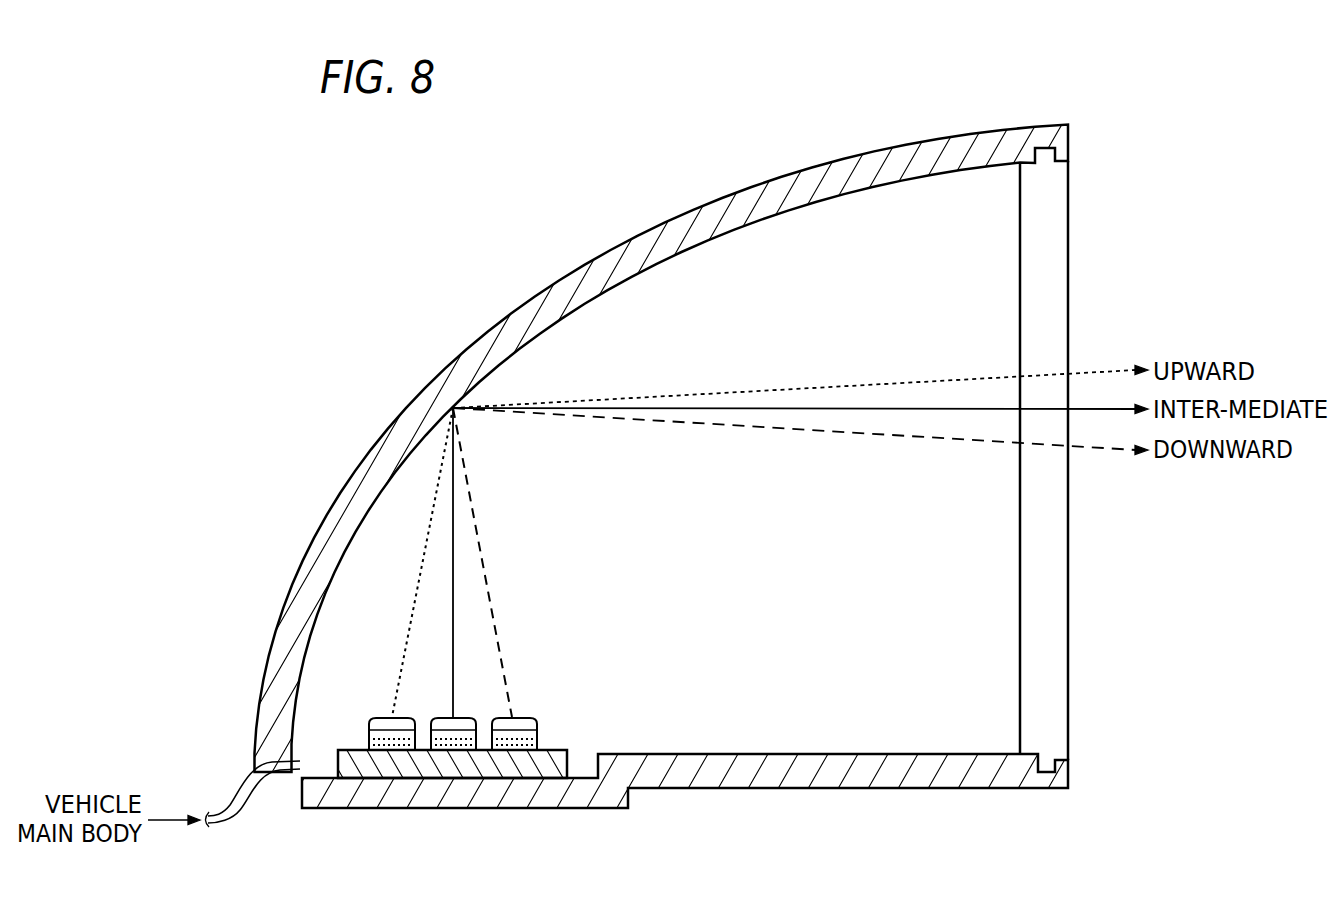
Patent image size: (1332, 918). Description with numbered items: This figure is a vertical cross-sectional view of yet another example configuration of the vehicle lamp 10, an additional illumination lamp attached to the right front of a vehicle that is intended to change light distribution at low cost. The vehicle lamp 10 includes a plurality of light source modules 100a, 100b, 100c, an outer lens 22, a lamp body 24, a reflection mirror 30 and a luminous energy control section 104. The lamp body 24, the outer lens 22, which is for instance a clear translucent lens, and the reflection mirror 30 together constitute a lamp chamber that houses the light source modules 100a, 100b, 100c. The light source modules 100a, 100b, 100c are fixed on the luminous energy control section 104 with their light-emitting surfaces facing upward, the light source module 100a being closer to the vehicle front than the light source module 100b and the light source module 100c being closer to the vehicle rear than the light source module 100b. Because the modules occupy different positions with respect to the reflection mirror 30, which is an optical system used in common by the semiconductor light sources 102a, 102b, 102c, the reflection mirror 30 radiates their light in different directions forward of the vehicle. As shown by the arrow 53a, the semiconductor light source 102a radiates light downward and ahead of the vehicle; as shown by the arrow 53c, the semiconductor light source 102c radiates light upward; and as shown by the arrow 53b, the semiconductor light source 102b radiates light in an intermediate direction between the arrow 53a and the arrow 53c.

The vehicle lamp 10 is at (1102, 122).
The outer lens 22 is at (1058, 195).
The lamp body 24 is at (973, 775).
The reflection mirror 30 is at (620, 256).
The arrow 53a is at (1080, 452).
The arrow 53b is at (1105, 410).
The arrow 53c is at (1085, 370).
The light source module 100a is at (537, 740).
The light source module 100b is at (480, 740).
The light source module 100c is at (368, 738).
The semiconductor light source 102a is at (515, 738).
The semiconductor light source 102b is at (457, 738).
The semiconductor light source 102c is at (388, 742).
The luminous energy control section 104 is at (560, 747).